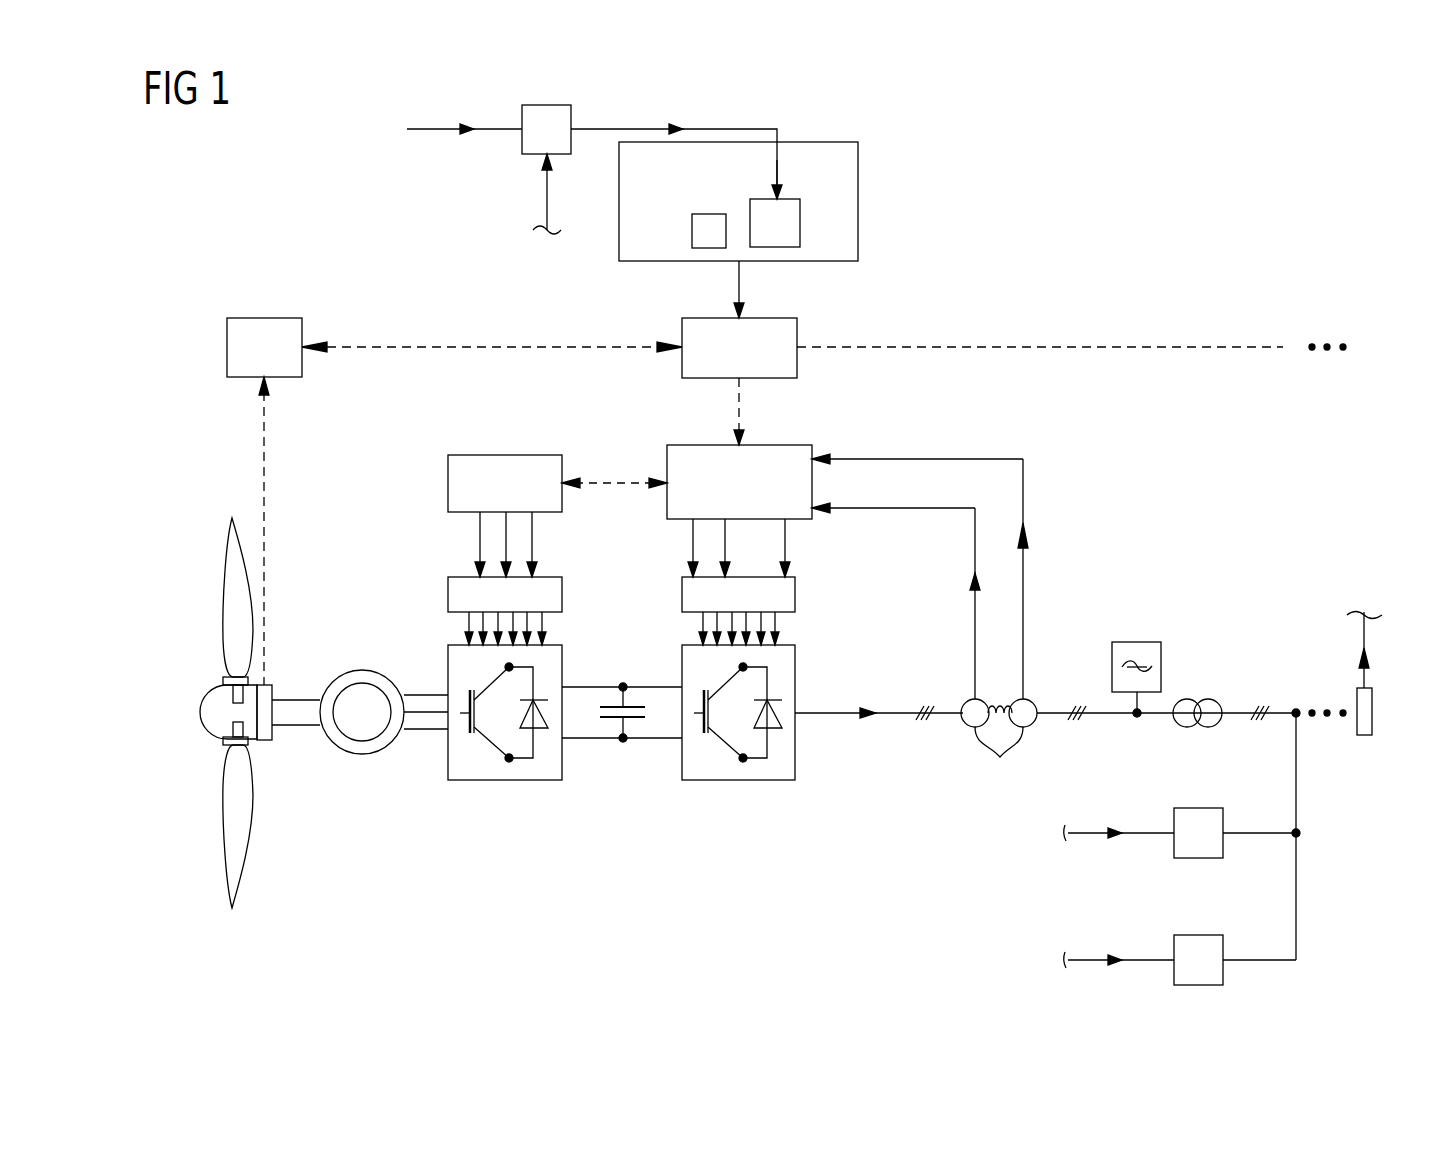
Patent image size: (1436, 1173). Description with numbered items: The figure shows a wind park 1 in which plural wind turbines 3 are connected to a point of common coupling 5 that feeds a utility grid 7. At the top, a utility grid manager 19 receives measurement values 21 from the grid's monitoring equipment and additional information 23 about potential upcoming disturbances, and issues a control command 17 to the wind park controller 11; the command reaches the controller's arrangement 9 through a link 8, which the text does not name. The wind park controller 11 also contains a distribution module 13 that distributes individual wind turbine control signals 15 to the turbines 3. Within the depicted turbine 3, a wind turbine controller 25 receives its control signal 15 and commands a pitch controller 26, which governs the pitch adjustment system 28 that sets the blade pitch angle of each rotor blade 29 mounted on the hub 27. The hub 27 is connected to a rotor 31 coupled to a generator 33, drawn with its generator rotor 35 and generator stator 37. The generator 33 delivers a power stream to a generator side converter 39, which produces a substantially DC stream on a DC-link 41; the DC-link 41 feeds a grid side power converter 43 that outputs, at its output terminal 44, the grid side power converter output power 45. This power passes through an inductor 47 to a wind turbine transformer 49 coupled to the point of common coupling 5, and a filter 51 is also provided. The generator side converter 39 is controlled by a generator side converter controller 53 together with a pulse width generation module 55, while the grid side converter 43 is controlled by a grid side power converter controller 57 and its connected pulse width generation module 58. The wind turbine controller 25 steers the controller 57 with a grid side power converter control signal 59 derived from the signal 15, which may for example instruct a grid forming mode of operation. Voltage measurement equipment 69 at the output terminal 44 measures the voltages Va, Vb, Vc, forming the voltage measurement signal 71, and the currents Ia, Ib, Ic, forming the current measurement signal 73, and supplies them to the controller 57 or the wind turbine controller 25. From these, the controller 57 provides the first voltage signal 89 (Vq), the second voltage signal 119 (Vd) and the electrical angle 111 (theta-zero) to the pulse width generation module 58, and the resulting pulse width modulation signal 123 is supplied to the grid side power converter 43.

The wind park 1 is at (1215, 318).
The wind turbine 3 is at (490, 305).
The point of common coupling 5 is at (1296, 708).
The utility grid 7 is at (1364, 735).
The input connection 8 is at (780, 196).
The arrangement for controlling a wind park or a wind turbine 9 is at (800, 224).
The wind park controller 11 is at (858, 200).
The distribution module 13 is at (692, 230).
The individual wind turbine control signal 15 is at (742, 315).
The control command 17 is at (684, 126).
The utility grid manager 19 is at (522, 150).
The measurement values 21 is at (549, 156).
The additional information 23 is at (468, 126).
The wind turbine controller 25 is at (682, 328).
The pitch controller 26 is at (227, 347).
The hub 27 is at (204, 710).
The pitch adjustment system 28 is at (268, 740).
The rotor blades 29 is at (228, 604).
The rotor 31 is at (298, 700).
The generator 33 is at (360, 785).
The generator rotor 35 is at (360, 670).
The generator stator 37 is at (375, 695).
The generator side converter 39 is at (510, 780).
The DC-link 41 is at (620, 775).
The grid side power converter 43 is at (744, 780).
The output terminal 44 is at (800, 716).
The grid side power converter output power 45 is at (878, 710).
The inductor 47 is at (998, 697).
The wind turbine transformer 49 is at (1209, 699).
The filter 51 is at (1134, 642).
The generator side converter controller 53 is at (448, 486).
The pulse width generation module 55 is at (448, 594).
The grid side power converter controller 57 is at (667, 466).
The pulse width generation module 58 is at (682, 594).
The grid side power converter control signal 59 is at (745, 442).
The voltage measurement equipment 69 is at (999, 747).
The voltage measurement signal 71 is at (1026, 520).
The current measurement signal 73 is at (973, 568).
The voltage controller output 89 is at (690, 572).
The electrical angle 111 is at (790, 573).
The second voltage signal 119 is at (730, 573).
The pulse width modulation signal 123 is at (778, 640).